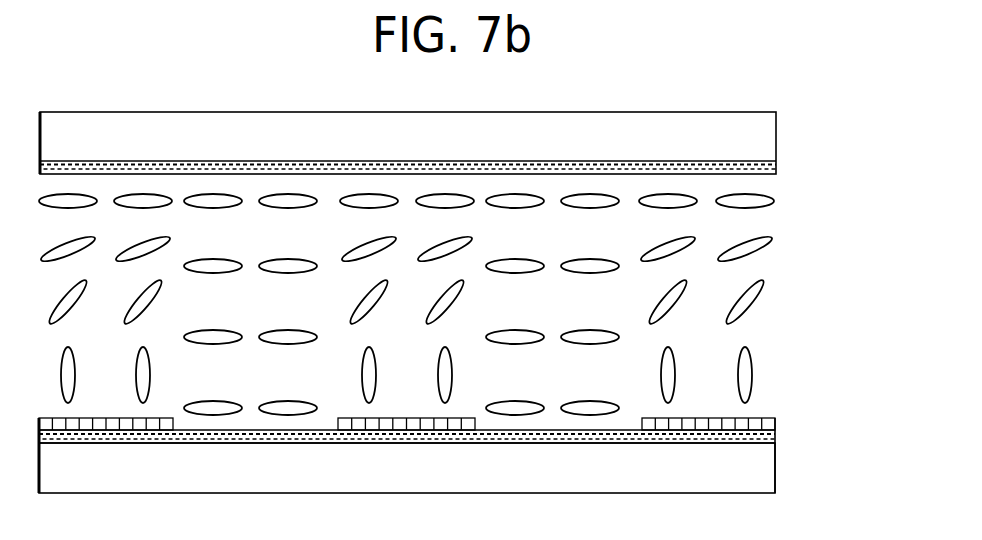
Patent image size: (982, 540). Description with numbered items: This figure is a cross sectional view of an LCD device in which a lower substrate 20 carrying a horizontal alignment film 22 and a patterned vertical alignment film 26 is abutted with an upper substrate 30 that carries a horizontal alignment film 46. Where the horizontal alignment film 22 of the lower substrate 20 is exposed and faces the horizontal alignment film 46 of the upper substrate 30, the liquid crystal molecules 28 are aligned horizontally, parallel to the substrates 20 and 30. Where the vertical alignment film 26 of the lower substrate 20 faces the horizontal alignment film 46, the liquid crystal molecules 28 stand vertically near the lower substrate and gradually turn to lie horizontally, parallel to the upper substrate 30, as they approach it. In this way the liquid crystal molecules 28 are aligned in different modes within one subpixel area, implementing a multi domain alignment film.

The upper substrate 30 is at (776, 137).
The horizontal alignment film 46 is at (776, 170).
The liquid crystal molecules 28 is at (763, 280).
The vertical alignment film 26 is at (775, 426).
The horizontal alignment film 22 is at (775, 437).
The lower substrate 20 is at (775, 466).